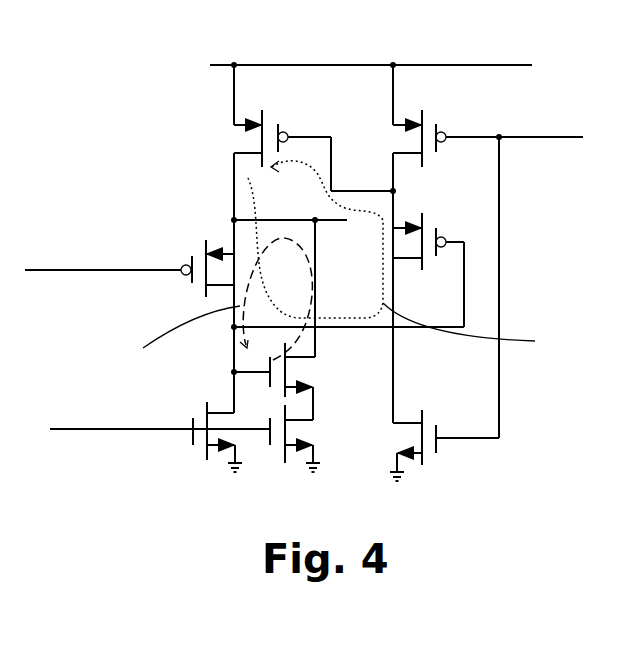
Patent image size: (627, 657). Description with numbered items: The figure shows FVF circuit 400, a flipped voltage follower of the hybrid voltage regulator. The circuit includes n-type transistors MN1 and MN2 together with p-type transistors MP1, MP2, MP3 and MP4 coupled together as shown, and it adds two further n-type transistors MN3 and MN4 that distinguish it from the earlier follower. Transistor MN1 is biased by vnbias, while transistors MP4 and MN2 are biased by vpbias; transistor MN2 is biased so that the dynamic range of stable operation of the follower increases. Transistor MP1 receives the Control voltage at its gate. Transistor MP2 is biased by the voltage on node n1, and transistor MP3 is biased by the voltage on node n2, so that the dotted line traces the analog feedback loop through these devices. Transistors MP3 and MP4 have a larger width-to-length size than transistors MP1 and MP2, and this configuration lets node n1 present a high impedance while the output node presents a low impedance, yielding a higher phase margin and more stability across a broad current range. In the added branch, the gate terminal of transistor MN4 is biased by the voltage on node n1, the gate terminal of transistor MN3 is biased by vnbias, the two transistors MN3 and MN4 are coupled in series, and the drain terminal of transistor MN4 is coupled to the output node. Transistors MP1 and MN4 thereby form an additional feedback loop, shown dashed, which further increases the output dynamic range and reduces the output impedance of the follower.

The FVF circuit 400 is at (340, 20).
The p-type transistor MP1 is at (215, 268).
The p-type transistor MP2 is at (424, 270).
The p-type transistor MP3 is at (273, 150).
The p-type transistor MP4 is at (438, 138).
The n-type transistor MN1 is at (203, 437).
The n-type transistor MN2 is at (436, 445).
The n-type transistor MN3 is at (301, 438).
The n-type transistor MN4 is at (283, 381).
The node n1 is at (338, 327).
The node n2 is at (362, 288).